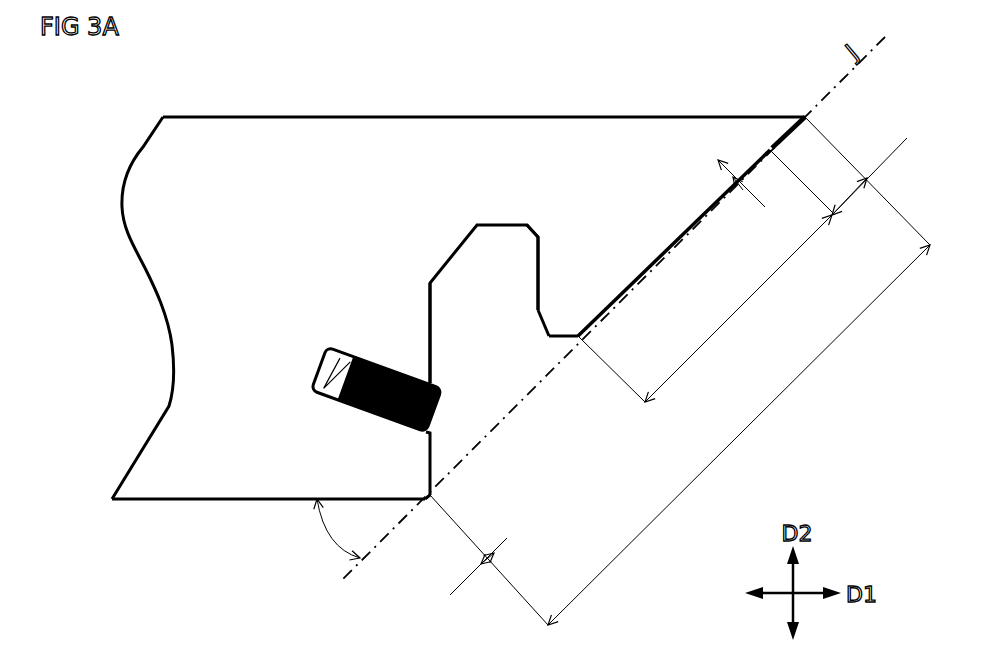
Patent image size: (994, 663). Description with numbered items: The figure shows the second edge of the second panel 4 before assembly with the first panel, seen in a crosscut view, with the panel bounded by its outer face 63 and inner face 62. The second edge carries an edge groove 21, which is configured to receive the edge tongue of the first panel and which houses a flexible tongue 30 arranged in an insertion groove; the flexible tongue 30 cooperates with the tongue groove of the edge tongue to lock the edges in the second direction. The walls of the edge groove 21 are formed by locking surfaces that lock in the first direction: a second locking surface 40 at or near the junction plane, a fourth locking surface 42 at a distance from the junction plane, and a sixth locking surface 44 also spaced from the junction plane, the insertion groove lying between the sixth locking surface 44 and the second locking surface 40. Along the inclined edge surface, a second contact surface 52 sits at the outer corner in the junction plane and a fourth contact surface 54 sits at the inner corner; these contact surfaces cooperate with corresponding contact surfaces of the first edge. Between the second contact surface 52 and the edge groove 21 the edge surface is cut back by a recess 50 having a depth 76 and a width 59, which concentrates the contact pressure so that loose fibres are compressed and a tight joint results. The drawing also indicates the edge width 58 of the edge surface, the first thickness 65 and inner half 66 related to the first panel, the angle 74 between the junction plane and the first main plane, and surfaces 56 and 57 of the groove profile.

The second panel 4 is at (262, 467).
The outer face 63 is at (218, 117).
The inner face 62 is at (190, 500).
The second contact surface 52 is at (789, 120).
The recess 50 is at (672, 244).
The depth 76 is at (759, 193).
The horizontal shoulder 56 is at (579, 340).
The chamfer 57 is at (540, 320).
The fourth locking surface 42 is at (538, 270).
The edge groove 21 is at (470, 265).
The sixth locking surface 44 is at (430, 330).
The second locking surface 40 is at (433, 455).
The fourth contact surface 54 is at (425, 494).
The flexible tongue 30 is at (347, 404).
The first thickness 65 is at (869, 170).
The width 59 is at (738, 308).
The edge width 58 is at (739, 435).
The inner half 66 is at (466, 566).
The angle 74 is at (322, 529).